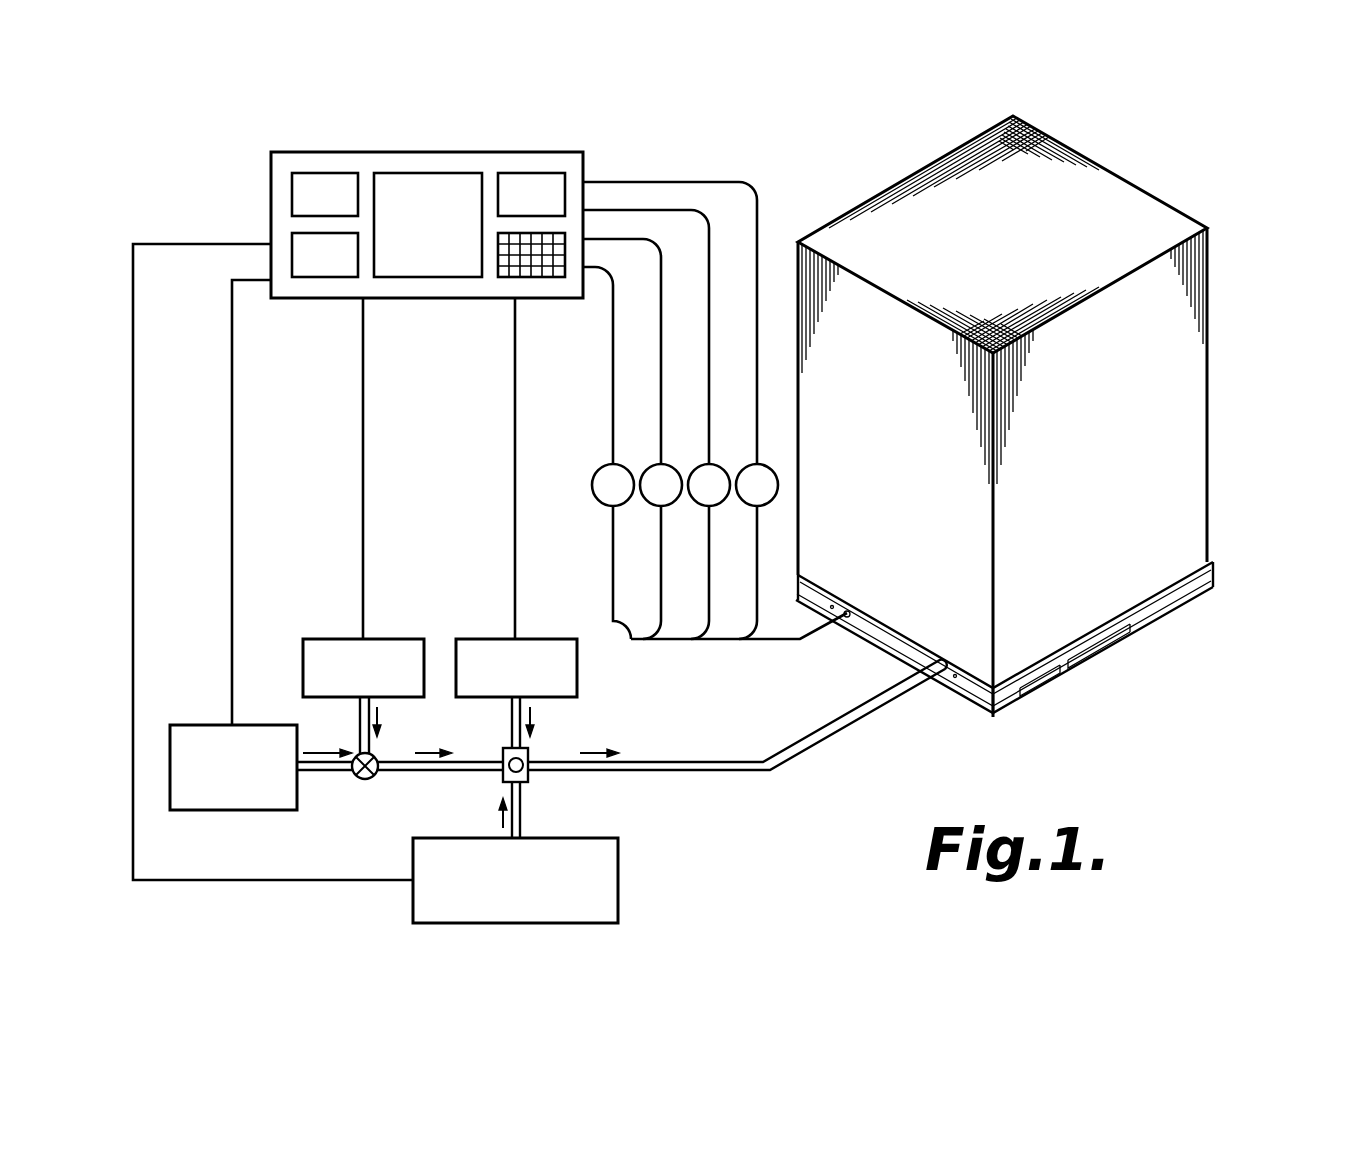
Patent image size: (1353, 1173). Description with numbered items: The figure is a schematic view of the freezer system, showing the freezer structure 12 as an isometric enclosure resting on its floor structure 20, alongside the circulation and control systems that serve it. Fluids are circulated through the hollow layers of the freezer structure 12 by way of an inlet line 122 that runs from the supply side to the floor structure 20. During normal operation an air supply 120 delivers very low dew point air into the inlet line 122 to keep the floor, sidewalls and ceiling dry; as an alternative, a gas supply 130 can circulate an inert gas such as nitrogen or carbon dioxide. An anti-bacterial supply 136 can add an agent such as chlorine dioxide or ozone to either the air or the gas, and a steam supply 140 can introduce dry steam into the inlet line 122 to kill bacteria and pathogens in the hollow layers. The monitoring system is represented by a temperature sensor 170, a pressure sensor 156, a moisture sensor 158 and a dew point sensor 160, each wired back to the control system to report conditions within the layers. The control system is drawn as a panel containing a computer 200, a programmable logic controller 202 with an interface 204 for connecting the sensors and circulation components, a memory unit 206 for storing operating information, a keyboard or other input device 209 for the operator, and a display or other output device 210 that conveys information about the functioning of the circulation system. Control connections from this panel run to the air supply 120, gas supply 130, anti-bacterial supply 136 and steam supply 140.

The freezer structure 12 is at (1162, 188).
The floor structure 20 is at (1217, 577).
The air supply 120 is at (333, 639).
The inlet line 122 is at (710, 762).
The gas supply 130 is at (210, 725).
The anti-bacterial supply 136 is at (600, 838).
The steam supply 140 is at (490, 639).
The pressure sensor 156 is at (646, 470).
The moisture sensor 158 is at (694, 470).
The dew point sensor 160 is at (743, 470).
The temperature sensor 170 is at (598, 470).
The computer 200 is at (550, 148).
The controller 202 is at (415, 175).
The interface 204 is at (292, 258).
The memory unit 206 is at (292, 192).
The keyboard or other input device 209 is at (556, 278).
The display or other output device 210 is at (563, 182).